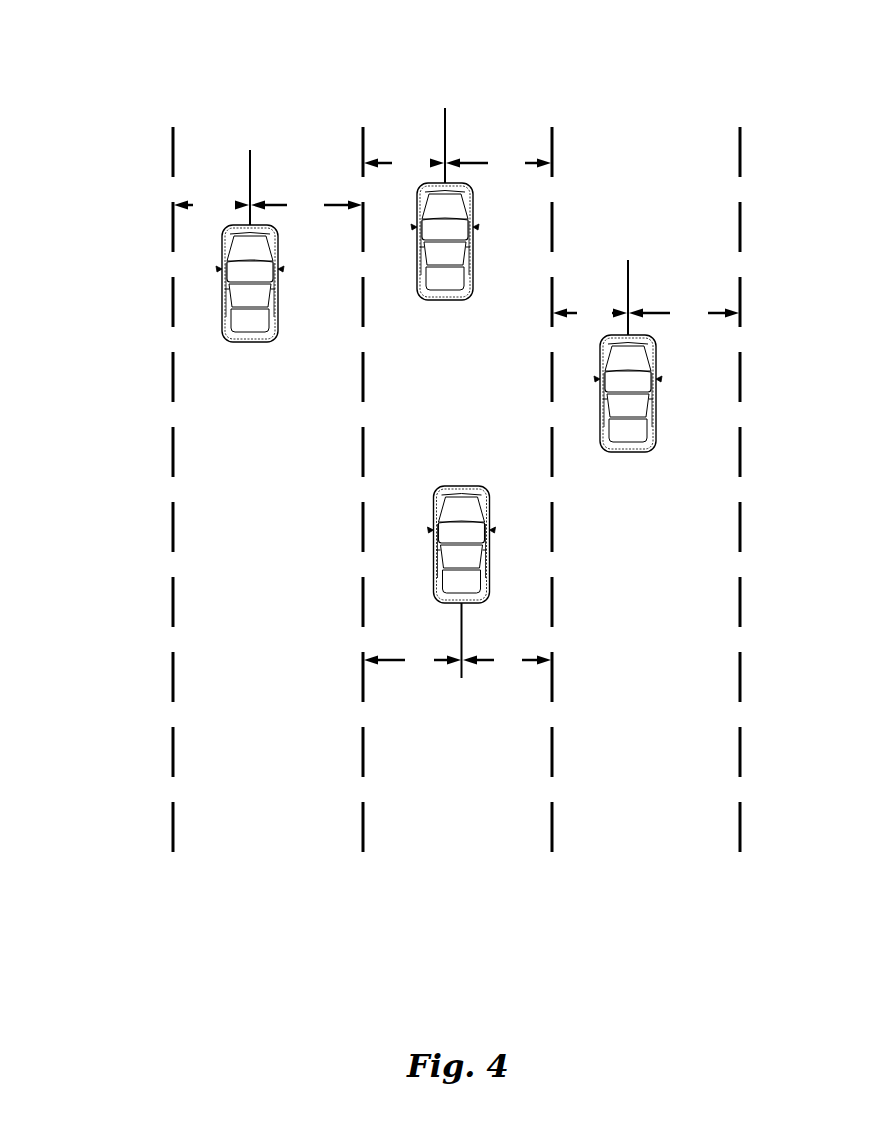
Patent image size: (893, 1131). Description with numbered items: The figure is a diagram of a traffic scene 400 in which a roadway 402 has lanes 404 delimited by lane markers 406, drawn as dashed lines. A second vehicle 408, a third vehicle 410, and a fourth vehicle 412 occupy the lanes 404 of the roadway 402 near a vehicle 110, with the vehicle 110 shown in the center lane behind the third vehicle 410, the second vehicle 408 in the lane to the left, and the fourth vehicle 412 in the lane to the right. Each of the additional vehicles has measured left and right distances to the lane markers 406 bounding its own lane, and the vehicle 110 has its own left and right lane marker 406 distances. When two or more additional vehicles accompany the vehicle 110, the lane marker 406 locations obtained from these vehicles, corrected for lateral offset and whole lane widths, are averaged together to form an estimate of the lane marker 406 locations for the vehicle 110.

The traffic scene 400 is at (463, 25).
The roadway 402 is at (124, 630).
The lanes 404 is at (252, 918).
The lane markers 406 is at (118, 880).
The second vehicle 408 is at (277, 283).
The third vehicle 410 is at (472, 242).
The fourth vehicle 412 is at (655, 392).
The vehicle 110 is at (490, 548).